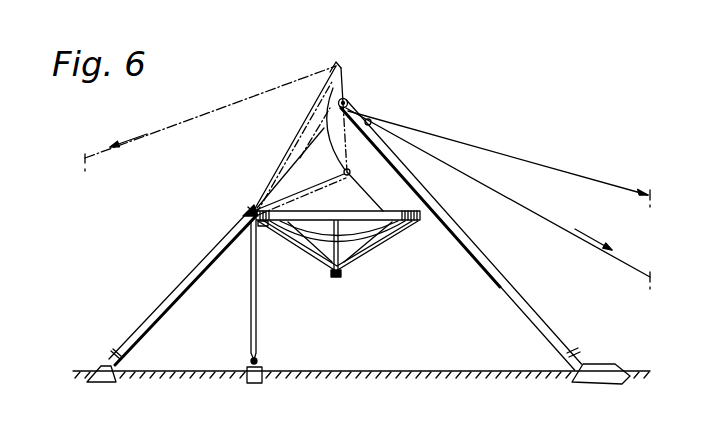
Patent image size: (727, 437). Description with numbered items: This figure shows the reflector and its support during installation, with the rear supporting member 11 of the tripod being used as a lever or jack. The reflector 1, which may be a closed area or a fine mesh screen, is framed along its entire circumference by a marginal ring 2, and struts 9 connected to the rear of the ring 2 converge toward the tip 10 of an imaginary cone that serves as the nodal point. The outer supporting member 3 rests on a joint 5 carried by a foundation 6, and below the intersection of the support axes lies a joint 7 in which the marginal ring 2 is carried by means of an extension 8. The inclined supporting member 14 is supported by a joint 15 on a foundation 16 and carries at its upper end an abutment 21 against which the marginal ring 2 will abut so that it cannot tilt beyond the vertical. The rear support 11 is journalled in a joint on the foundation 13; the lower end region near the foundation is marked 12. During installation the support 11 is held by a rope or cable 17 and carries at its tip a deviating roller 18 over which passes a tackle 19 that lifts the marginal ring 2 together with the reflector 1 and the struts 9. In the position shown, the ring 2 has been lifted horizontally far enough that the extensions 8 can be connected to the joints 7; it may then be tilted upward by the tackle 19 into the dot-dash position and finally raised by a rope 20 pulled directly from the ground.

The reflector 1 is at (383, 236).
The marginal ring 2 is at (386, 215).
The outer supporting member 3 is at (253, 316).
The joint 5 is at (259, 359).
The foundation 6 is at (250, 384).
The joint 7 is at (250, 211).
The extension 8 is at (263, 227).
The strut 9 is at (357, 252).
The tip of the cone 10 is at (337, 279).
The supporting member 11 is at (497, 285).
The collar 12 is at (580, 358).
The foundation 13 is at (605, 380).
The inclined supporting member 14 is at (156, 313).
The joint 15 is at (112, 357).
The foundation 16 is at (103, 378).
The rope or cable 17 is at (555, 170).
The deviating roller 18 is at (347, 100).
The tackle 19 is at (352, 106).
The rope 20 is at (240, 101).
The abutment 21 is at (245, 213).